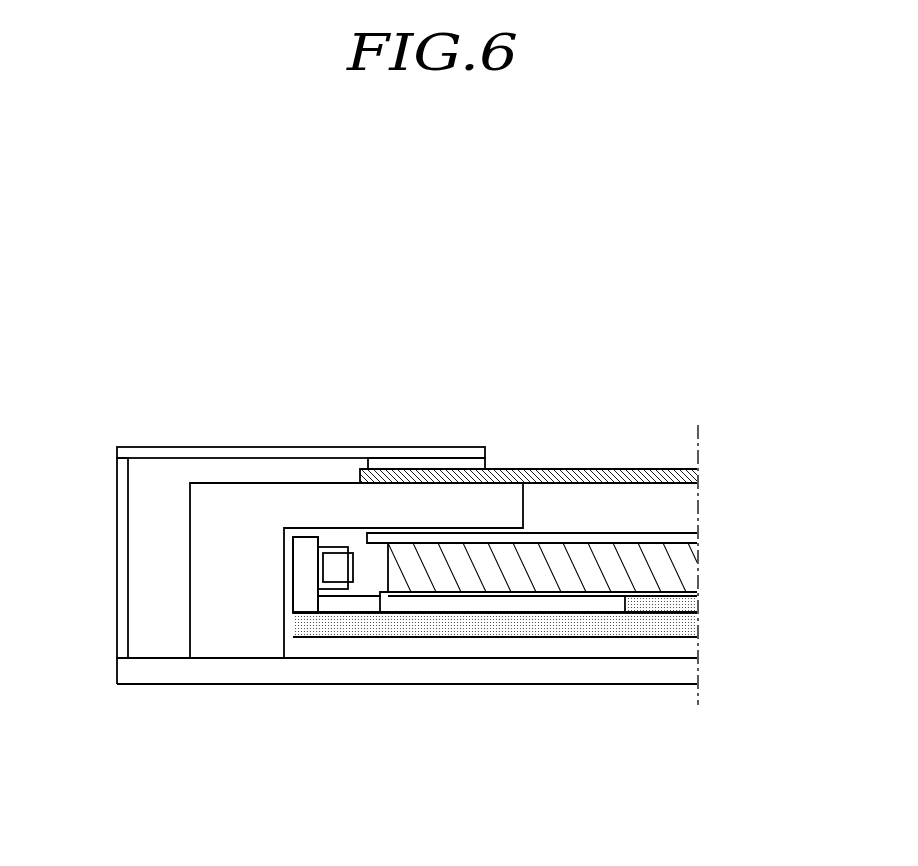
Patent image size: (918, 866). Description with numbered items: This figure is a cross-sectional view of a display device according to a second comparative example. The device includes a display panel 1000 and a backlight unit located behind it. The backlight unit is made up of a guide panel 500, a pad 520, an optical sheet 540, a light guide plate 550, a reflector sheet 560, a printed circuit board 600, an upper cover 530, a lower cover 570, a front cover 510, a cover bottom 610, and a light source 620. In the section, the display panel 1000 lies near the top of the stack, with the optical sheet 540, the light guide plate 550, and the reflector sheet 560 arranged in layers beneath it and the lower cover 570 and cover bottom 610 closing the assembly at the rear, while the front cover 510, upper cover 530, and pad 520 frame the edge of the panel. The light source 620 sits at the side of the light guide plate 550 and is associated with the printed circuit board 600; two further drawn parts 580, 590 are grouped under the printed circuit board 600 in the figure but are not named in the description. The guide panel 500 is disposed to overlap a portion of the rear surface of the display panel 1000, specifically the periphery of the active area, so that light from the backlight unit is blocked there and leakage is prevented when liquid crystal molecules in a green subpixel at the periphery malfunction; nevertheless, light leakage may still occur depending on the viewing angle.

The display panel 1000 is at (700, 473).
The guide panel 500 is at (200, 567).
The front cover 510 is at (123, 570).
The pad 520 is at (437, 463).
The upper cover 530 is at (292, 452).
The optical sheet 540 is at (692, 538).
The light guide plate 550 is at (692, 567).
The reflector sheet 560 is at (692, 594).
The lower cover 570 is at (692, 616).
The bracket 580 is at (306, 607).
The substrate 590 is at (364, 607).
The printed circuit board 600 is at (290, 765).
The cover bottom 610 is at (692, 672).
The light source 620 is at (348, 568).